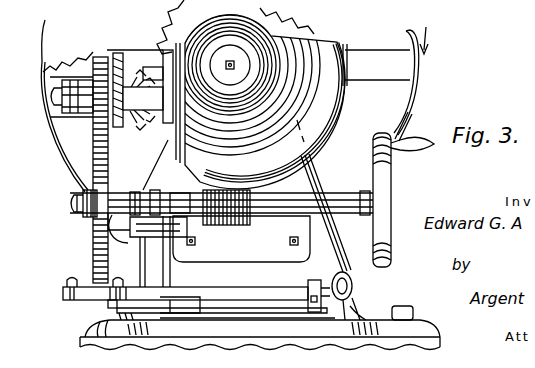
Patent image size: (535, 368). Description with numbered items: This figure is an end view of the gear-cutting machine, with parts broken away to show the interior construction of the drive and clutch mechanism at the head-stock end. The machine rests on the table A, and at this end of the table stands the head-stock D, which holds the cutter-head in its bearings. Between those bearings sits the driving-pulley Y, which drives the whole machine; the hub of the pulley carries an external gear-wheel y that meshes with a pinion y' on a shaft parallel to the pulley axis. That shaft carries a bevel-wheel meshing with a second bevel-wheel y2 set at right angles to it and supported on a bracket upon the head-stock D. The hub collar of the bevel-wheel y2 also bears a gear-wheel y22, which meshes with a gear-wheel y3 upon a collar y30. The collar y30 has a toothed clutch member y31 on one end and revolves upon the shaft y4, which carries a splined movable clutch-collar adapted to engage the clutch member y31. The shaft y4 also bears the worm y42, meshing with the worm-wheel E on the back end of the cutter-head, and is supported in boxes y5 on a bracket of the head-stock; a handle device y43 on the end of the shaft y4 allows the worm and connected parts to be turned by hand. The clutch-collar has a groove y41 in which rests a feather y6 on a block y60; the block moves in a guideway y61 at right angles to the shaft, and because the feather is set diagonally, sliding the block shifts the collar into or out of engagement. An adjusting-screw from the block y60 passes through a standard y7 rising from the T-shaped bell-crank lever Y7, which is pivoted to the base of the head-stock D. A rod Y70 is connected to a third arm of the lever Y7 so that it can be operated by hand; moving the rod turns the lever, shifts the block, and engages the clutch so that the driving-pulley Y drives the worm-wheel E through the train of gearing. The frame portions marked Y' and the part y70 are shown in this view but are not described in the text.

The worm-wheel E is at (256, 152).
The external gear-wheel y is at (235, 27).
The driving-pulley Y is at (388, 81).
The frame arc Y' is at (64, 96).
The handle device y43 is at (384, 180).
The boxes y5 is at (328, 193).
The shaft y4 is at (70, 203).
The gear-wheel y3 is at (93, 160).
The bevel-wheel y2 is at (115, 58).
The pinion y' is at (140, 76).
The gear-wheel y22 is at (93, 57).
The collar y30 is at (95, 229).
The toothed clutch member y31 is at (133, 192).
The groove y41 is at (157, 192).
The worm y42 is at (245, 222).
The block y60 is at (182, 251).
The head-stock D is at (323, 233).
The feather y6 is at (92, 15).
The guideway y61 is at (175, 267).
The standard y7 is at (165, 262).
The T-shaped bell-crank lever Y7 is at (63, 293).
The rod Y70 is at (298, 296).
The slide y70 is at (110, 305).
The table A is at (460, 323).